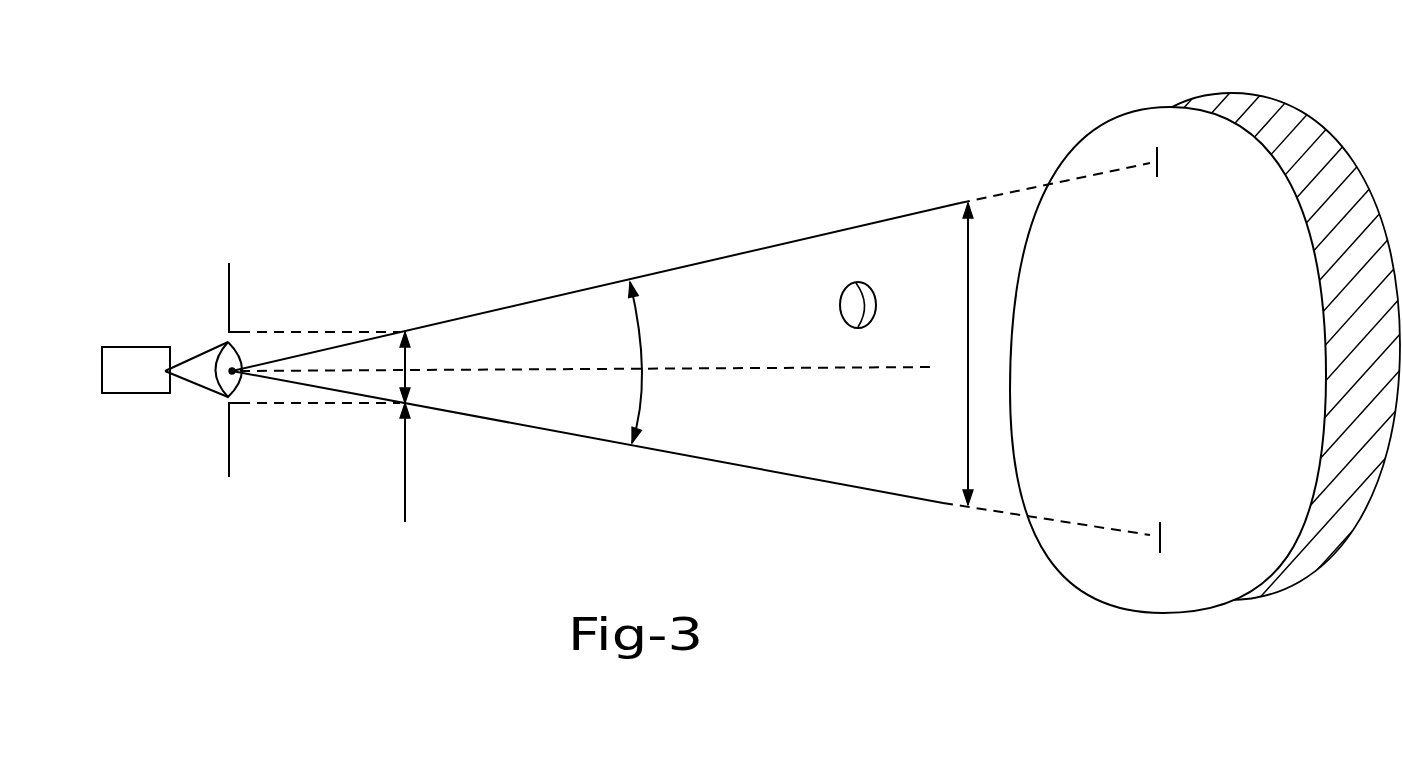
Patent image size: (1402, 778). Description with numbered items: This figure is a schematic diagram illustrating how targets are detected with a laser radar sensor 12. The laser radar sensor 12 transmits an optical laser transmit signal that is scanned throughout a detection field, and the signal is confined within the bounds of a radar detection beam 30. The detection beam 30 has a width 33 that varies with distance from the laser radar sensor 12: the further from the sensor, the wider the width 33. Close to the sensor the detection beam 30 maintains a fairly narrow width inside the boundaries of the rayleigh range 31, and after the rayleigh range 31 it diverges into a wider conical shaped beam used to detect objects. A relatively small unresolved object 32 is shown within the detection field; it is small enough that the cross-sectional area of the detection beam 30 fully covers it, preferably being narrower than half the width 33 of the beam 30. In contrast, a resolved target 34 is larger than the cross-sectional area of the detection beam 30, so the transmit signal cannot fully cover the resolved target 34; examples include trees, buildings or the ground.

The laser radar sensor 12 is at (130, 372).
The radar detection beam 30 is at (652, 330).
The rayleigh range 31 is at (423, 357).
The unresolved object 32 is at (846, 306).
The width 33 is at (952, 282).
The resolved target 34 is at (1113, 567).